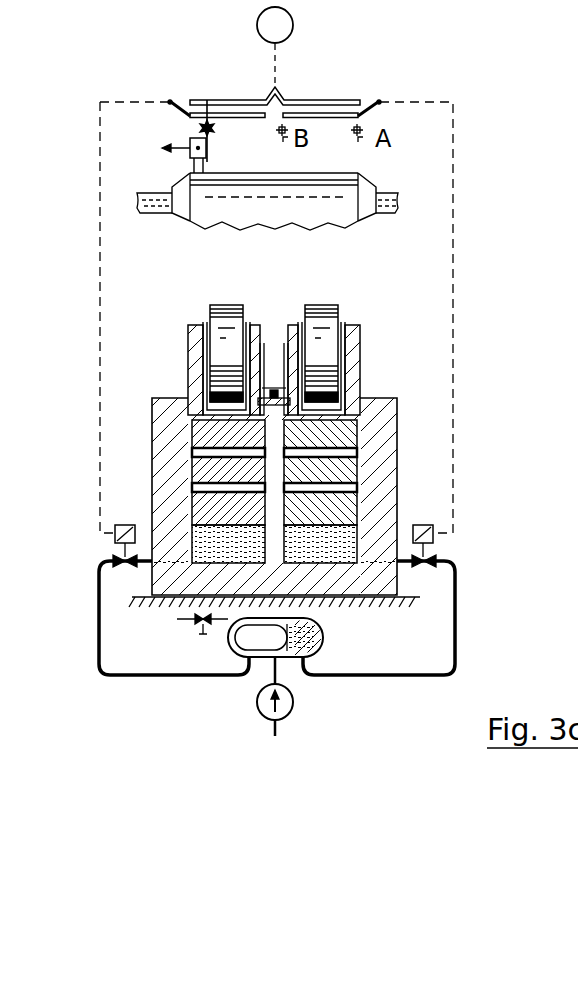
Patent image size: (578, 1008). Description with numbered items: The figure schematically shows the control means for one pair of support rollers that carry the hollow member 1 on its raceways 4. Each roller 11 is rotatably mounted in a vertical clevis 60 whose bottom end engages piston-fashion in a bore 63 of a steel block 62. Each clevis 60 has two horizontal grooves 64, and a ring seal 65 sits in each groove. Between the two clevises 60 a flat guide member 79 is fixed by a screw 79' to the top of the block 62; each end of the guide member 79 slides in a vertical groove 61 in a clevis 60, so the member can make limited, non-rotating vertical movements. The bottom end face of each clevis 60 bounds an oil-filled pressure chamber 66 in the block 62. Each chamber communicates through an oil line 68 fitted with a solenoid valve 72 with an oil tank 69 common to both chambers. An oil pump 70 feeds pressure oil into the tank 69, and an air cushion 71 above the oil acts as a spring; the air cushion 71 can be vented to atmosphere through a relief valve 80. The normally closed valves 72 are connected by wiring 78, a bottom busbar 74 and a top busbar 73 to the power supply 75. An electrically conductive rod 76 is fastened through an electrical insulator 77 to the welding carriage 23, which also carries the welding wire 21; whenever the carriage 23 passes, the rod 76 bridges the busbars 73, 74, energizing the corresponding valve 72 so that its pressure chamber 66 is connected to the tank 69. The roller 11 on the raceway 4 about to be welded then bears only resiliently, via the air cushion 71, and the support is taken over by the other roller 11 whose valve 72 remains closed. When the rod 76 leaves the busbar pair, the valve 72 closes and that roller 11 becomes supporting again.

The hollow member 1 is at (378, 181).
The raceway 4 is at (323, 173).
The roller 11 is at (225, 317).
The welding wire 21 is at (194, 168).
The welding carriage 23 is at (162, 150).
The vertical clevis 60 is at (198, 338).
The vertical groove 61 is at (268, 388).
The steel block 62 is at (377, 408).
The bore 63 is at (190, 428).
The horizontal groove 64 is at (332, 452).
The ring seal 65 is at (325, 490).
The oil-filled pressure chamber 66 is at (345, 543).
The oil line 68 is at (98, 598).
The oil tank 69 is at (318, 648).
The oil pump 70 is at (295, 702).
The air cushion 71 is at (323, 631).
The solenoid valve 72 is at (119, 556).
The top busbar 73 is at (240, 99).
The bottom busbar 74 is at (223, 115).
The power supply 75 is at (294, 25).
The electrically conductive rod 76 is at (187, 110).
The electrical insulator 77 is at (214, 128).
The wiring 78 is at (100, 247).
The flat guide member 79 is at (196, 373).
The screw 79' is at (200, 352).
The relief valve 80 is at (190, 626).